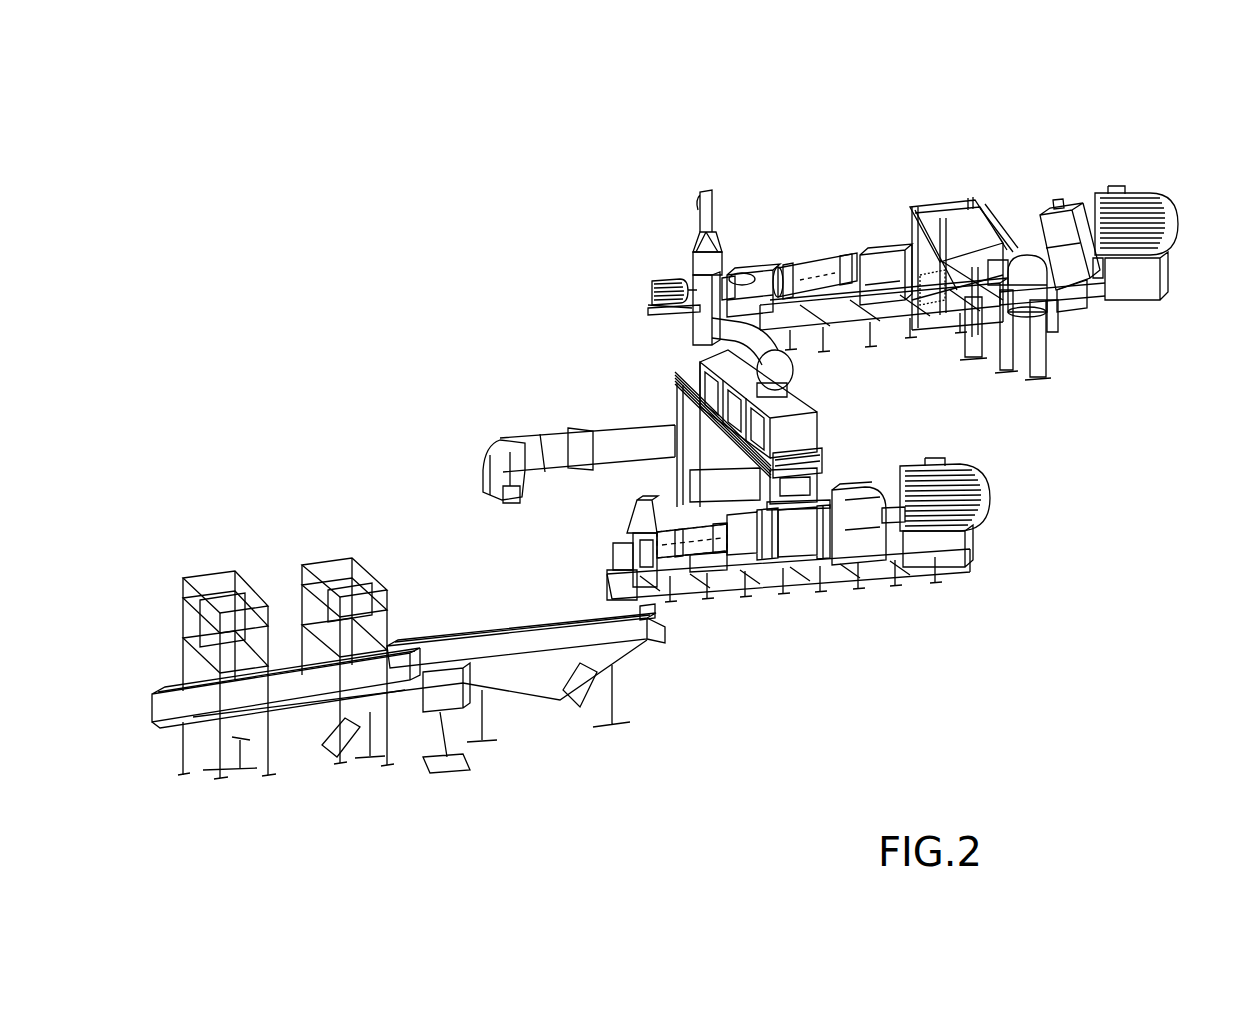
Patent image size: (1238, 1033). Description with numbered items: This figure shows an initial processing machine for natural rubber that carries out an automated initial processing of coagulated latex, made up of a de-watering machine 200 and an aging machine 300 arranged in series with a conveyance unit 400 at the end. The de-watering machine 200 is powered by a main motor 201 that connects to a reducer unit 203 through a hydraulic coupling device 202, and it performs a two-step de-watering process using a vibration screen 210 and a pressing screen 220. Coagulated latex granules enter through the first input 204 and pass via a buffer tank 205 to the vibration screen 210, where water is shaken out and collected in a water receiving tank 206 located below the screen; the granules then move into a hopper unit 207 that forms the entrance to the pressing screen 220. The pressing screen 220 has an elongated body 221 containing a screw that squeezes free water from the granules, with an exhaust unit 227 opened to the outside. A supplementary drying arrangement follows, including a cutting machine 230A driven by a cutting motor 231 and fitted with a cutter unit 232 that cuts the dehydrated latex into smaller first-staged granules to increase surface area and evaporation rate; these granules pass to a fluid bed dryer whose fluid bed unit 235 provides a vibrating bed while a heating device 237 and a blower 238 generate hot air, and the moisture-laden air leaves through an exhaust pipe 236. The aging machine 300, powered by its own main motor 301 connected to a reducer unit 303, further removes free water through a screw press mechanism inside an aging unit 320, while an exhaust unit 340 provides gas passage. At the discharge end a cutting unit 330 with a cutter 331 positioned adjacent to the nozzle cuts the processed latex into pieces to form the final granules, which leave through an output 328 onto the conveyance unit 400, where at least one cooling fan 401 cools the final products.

The de-watering machine 200 is at (1142, 118).
The main motor 201 is at (1130, 253).
The hydraulic coupling device 202 is at (1083, 310).
The reducer unit 203 is at (1010, 217).
The first input 204 is at (1012, 350).
The buffer tank 205 is at (1050, 318).
The water receiving tank 206 is at (880, 252).
The hopper unit 207 is at (905, 212).
The vibration screen 210 is at (978, 200).
The pressing screen 220 is at (845, 265).
The elongated body 221 is at (815, 276).
The exhaust unit 227 is at (697, 255).
The cutting machine 230A is at (674, 310).
The cutting motor 231 is at (657, 283).
The cutter unit 232 is at (742, 378).
The fluid bed unit 235 is at (675, 387).
The exhaust pipe 236 is at (655, 305).
The heating device 237 is at (627, 428).
The blower 238 is at (497, 448).
The aging machine 300 is at (1008, 755).
The main motor 301 is at (960, 523).
The reducer unit 303 is at (850, 490).
The aging unit 320 is at (732, 560).
The output 328 is at (647, 613).
The cutting unit 330 is at (623, 562).
The cutter 331 is at (663, 600).
The exhaust unit 340 is at (637, 517).
The conveyance unit 400 is at (540, 640).
The cooling fan 401 is at (303, 572).